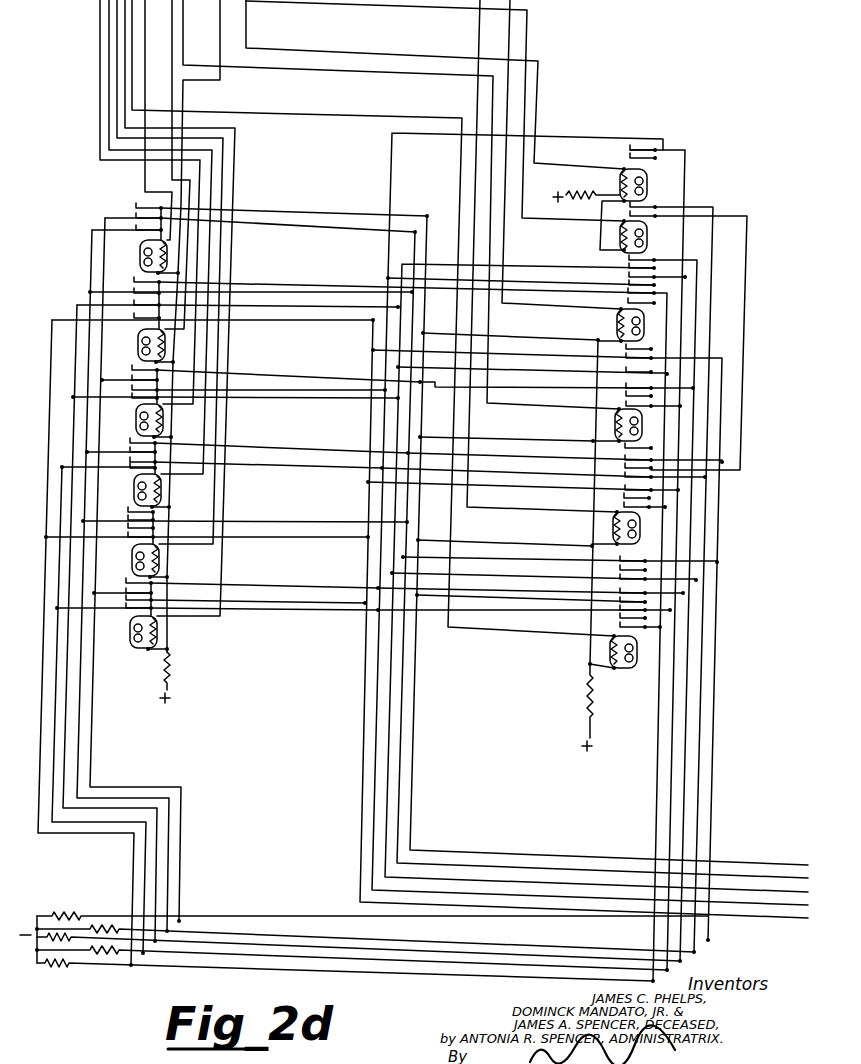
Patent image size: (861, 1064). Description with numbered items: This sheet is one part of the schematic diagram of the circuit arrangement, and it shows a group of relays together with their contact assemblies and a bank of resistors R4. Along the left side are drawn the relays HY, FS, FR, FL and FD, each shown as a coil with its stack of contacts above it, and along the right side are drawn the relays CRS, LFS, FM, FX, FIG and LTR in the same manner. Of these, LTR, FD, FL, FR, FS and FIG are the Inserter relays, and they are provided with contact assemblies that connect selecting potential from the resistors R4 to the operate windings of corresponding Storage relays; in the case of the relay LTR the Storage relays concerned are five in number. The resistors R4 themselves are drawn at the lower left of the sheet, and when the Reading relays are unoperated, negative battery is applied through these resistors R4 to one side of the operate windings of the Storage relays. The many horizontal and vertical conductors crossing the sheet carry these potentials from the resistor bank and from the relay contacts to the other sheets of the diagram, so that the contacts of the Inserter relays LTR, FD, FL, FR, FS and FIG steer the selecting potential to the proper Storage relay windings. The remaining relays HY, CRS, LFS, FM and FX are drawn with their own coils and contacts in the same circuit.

The relay HY is at (134, 266).
The Inserter relay FS is at (130, 428).
The Inserter relay FR is at (128, 498).
The Inserter relay FL is at (126, 568).
The Inserter relay FD is at (124, 640).
The relay CR-S CRS is at (680, 194).
The relay LFS is at (675, 247).
The relay FM is at (668, 334).
The relay FX is at (664, 437).
The Inserter relay FIG is at (664, 540).
The Inserter relay LTR is at (660, 660).
The resistors R4 is at (57, 968).